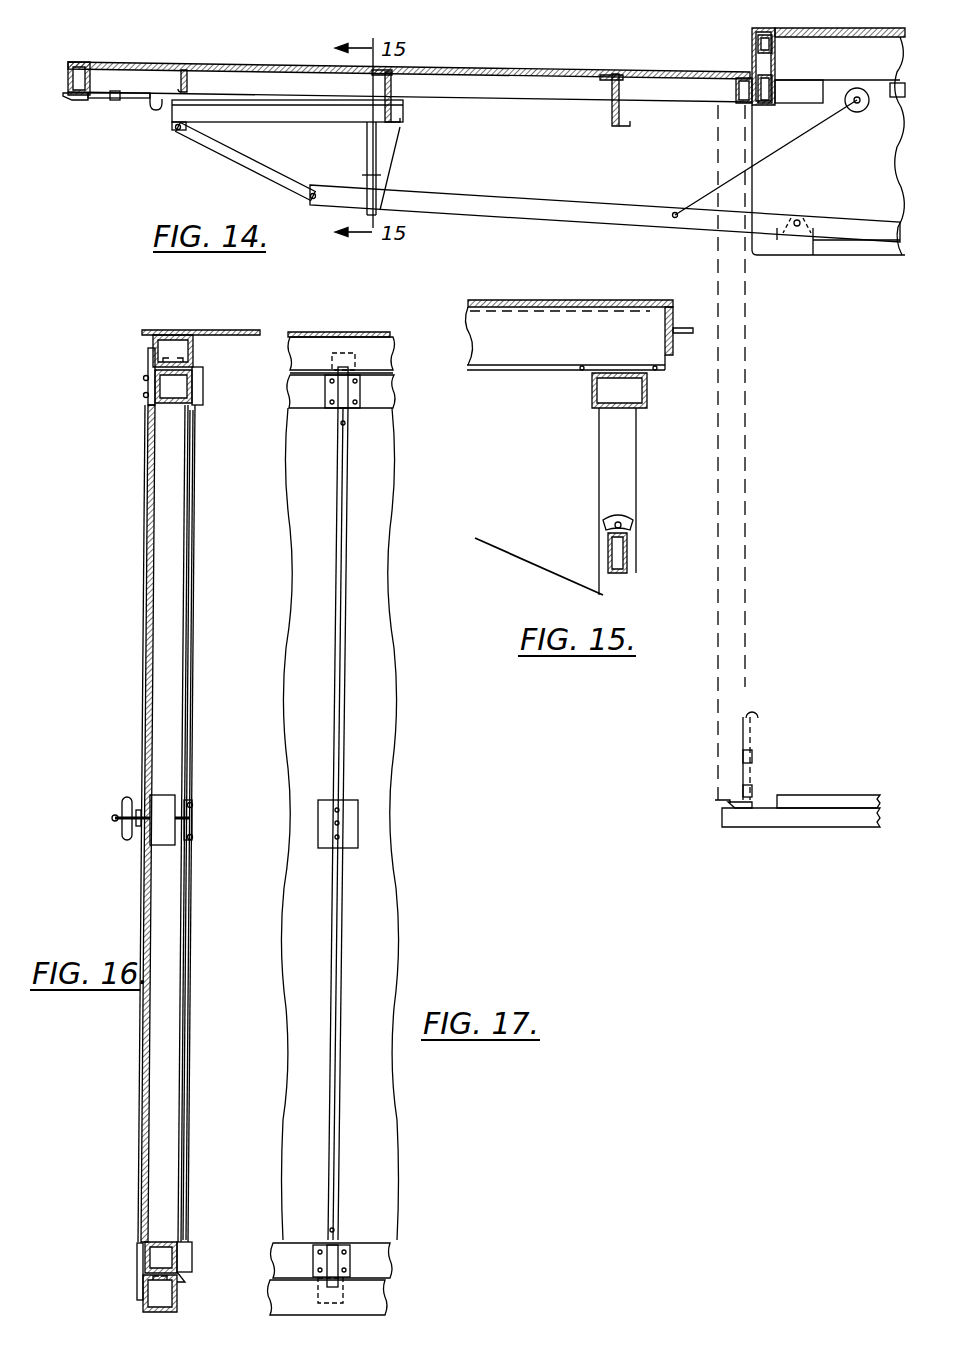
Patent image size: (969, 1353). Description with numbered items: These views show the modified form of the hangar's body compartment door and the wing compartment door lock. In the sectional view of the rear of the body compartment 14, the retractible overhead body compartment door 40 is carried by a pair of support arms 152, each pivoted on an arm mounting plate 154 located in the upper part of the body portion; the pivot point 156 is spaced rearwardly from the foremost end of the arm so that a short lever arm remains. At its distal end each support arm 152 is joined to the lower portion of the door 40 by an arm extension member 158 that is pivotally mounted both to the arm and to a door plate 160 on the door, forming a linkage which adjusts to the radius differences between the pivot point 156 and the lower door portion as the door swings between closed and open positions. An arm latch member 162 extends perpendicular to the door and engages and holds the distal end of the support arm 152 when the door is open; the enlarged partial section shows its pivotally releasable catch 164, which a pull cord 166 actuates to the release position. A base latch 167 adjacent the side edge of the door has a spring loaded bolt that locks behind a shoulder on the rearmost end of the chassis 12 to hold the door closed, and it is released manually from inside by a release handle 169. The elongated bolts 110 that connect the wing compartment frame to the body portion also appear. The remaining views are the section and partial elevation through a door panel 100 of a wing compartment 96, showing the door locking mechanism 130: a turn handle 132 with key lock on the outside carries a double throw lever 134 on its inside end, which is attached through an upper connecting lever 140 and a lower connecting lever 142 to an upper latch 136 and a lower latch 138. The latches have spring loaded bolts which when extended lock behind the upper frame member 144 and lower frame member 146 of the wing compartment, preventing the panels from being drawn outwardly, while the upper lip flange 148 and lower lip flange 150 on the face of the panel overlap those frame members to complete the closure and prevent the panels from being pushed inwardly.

In FIG. 14, the chassis 12 is at (807, 820).
In FIG. 14, the body compartment 14 is at (751, 30).
In FIG. 14, the body compartment door 40 is at (314, 62).
In FIG. 15, the body compartment door 40 is at (615, 302).
In FIG. 16, the wing compartment 96 is at (241, 328).
In FIG. 17, the wing compartment 96 is at (348, 328).
In FIG. 16, the door panel 100 is at (160, 630).
In FIG. 17, the door panel 100 is at (375, 697).
In FIG. 14, the elongated bolt 110 is at (875, 250).
In FIG. 16, the door locking mechanism 130 is at (193, 898).
In FIG. 17, the door locking mechanism 130 is at (348, 888).
In FIG. 16, the turn handle 132 is at (127, 803).
In FIG. 16, the double throw lever 134 is at (188, 822).
In FIG. 17, the double throw lever 134 is at (339, 823).
In FIG. 16, the upper latch 136 is at (198, 385).
In FIG. 17, the upper latch 136 is at (348, 390).
In FIG. 16, the lower latch 138 is at (190, 1258).
In FIG. 17, the lower latch 138 is at (330, 1262).
In FIG. 16, the upper connecting lever 140 is at (193, 632).
In FIG. 17, the upper connecting lever 140 is at (342, 618).
In FIG. 16, the lower connecting lever 142 is at (188, 1035).
In FIG. 17, the lower connecting lever 142 is at (337, 1068).
In FIG. 16, the upper frame member 144 is at (193, 345).
In FIG. 17, the upper frame member 144 is at (373, 350).
In FIG. 16, the lower frame member 146 is at (142, 1292).
In FIG. 17, the lower frame member 146 is at (362, 1290).
In FIG. 16, the upper lip flange 148 is at (149, 355).
In FIG. 17, the upper lip flange 148 is at (332, 323).
In FIG. 16, the lower lip flange 150 is at (140, 1280).
In FIG. 17, the lower lip flange 150 is at (317, 1310).
In FIG. 14, the support arm 152 is at (527, 207).
In FIG. 14, the arm mounting plate 154 is at (797, 243).
In FIG. 14, the pivot point 156 is at (797, 219).
In FIG. 14, the arm extension member 158 is at (238, 158).
In FIG. 14, the door plate 160 is at (197, 127).
In FIG. 15, the arm latch member 162 is at (613, 447).
In FIG. 15, the catch 164 is at (608, 548).
In FIG. 15, the pull cord 166 is at (488, 541).
In FIG. 14, the base latch 167 is at (80, 100).
In FIG. 14, the release handle 169 is at (158, 110).